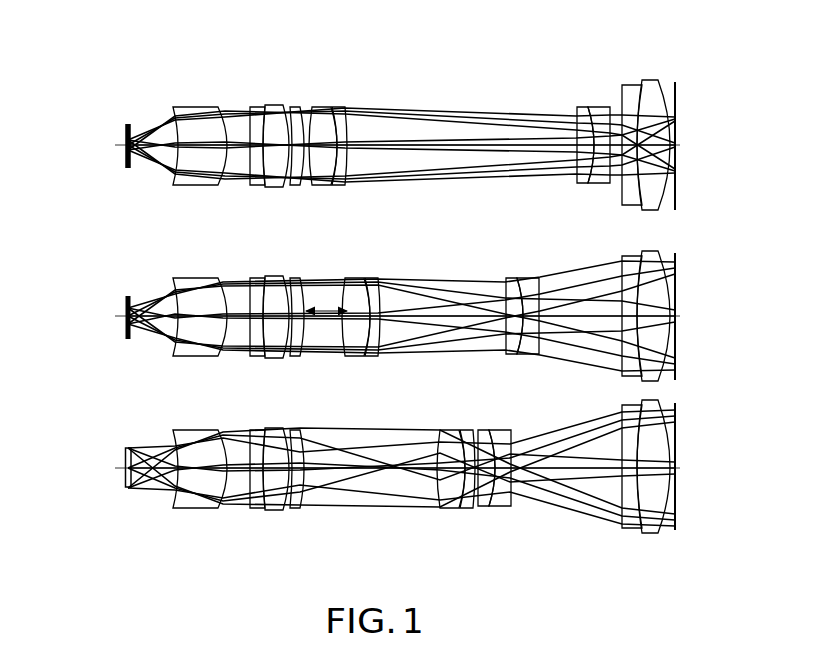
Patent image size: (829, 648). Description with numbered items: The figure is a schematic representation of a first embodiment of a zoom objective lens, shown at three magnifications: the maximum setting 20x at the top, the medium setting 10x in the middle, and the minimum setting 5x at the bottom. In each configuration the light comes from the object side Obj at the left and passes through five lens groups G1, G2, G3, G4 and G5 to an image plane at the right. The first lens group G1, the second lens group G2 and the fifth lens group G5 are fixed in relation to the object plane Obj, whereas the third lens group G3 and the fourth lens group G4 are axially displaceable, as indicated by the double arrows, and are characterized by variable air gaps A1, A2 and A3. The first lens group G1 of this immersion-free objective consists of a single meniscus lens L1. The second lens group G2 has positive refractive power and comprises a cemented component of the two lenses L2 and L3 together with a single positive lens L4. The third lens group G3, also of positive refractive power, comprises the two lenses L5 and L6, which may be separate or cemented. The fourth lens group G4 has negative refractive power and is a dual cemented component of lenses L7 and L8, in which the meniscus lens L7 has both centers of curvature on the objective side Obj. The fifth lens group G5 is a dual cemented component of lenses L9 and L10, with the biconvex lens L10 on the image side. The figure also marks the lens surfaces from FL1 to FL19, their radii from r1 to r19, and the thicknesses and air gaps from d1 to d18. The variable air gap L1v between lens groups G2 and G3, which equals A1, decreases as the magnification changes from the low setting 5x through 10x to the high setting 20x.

The object side Obj is at (85, 146).
The first lens surface FL1 is at (125, 147).
The last lens surface FL19 is at (677, 155).
The meniscus lens L1 is at (192, 116).
The lens L2 is at (256, 102).
The lens L3 is at (277, 110).
The single lens L4 is at (295, 108).
The lens L5 is at (318, 113).
The lens L6 is at (338, 117).
The meniscus lens L7 is at (582, 112).
The lens L8 is at (600, 112).
The lens L9 is at (629, 95).
The biconvex lens L10 is at (660, 95).
The first lens group G1 is at (200, 139).
The second lens group G2 is at (270, 121).
The third lens group G3 is at (335, 123).
The fourth lens group G4 is at (593, 132).
The fifth lens group G5 is at (658, 124).
The maximum magnification configuration 20x is at (399, 190).
The medium magnification configuration 10x is at (399, 368).
The minimum magnification configuration 5x is at (399, 526).
The first radius r1 is at (126, 325).
The last radius r19 is at (677, 311).
The variable air gap L1v is at (330, 323).
The first air gap d1 is at (150, 491).
The last air gap d18 is at (655, 470).
The variable air gap A1 is at (362, 493).
The variable air gap A2 is at (470, 507).
The variable air gap A3 is at (569, 476).